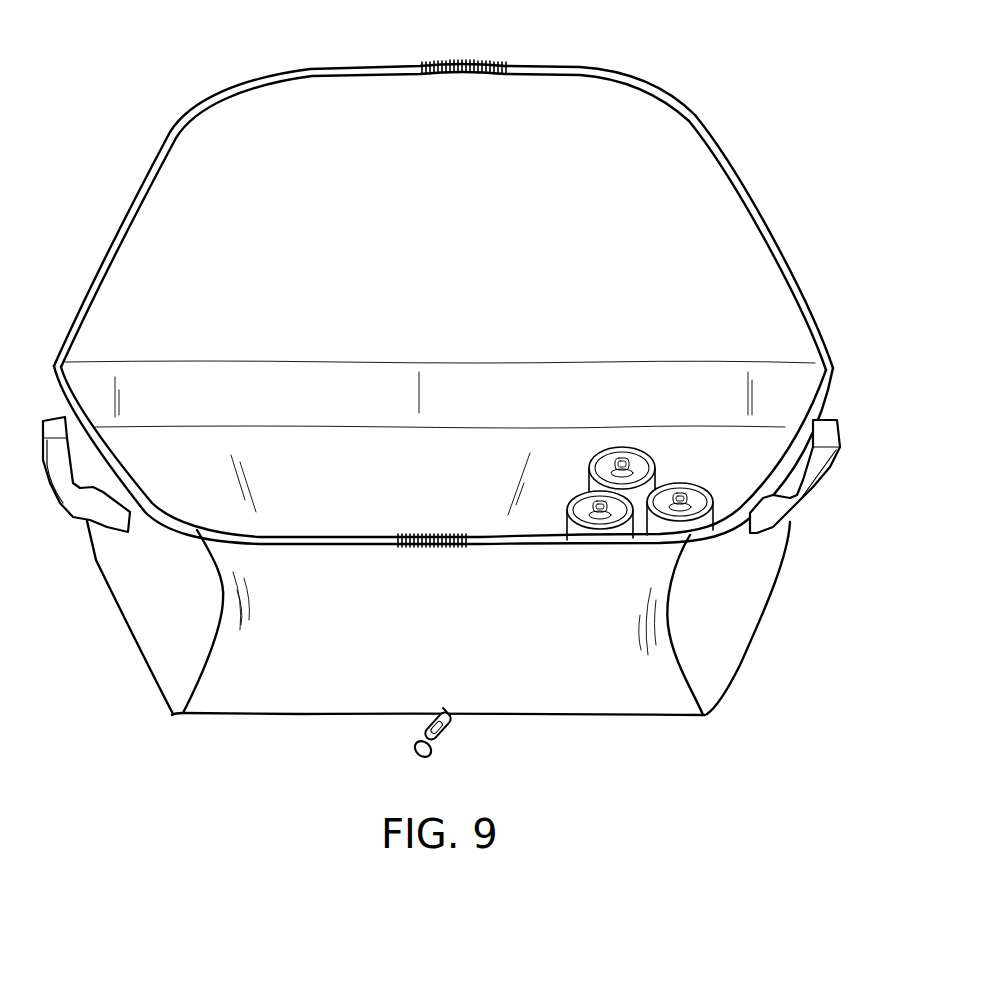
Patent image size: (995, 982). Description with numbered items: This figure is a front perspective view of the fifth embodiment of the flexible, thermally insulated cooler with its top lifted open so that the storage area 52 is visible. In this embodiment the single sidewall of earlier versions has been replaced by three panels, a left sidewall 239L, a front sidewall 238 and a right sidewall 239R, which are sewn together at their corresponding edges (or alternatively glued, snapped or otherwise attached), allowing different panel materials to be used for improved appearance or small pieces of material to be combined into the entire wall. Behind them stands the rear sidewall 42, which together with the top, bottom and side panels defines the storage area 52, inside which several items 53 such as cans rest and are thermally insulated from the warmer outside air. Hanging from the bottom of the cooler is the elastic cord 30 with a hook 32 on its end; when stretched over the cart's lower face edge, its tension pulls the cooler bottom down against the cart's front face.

The storage area 52 is at (560, 113).
The rear sidewall 42 is at (258, 393).
The items 53 is at (697, 497).
The left sidewall 239L is at (163, 628).
The right sidewall 239R is at (723, 645).
The front sidewall 238 is at (553, 695).
The elastic cord 30 is at (437, 712).
The hook 32 is at (421, 740).